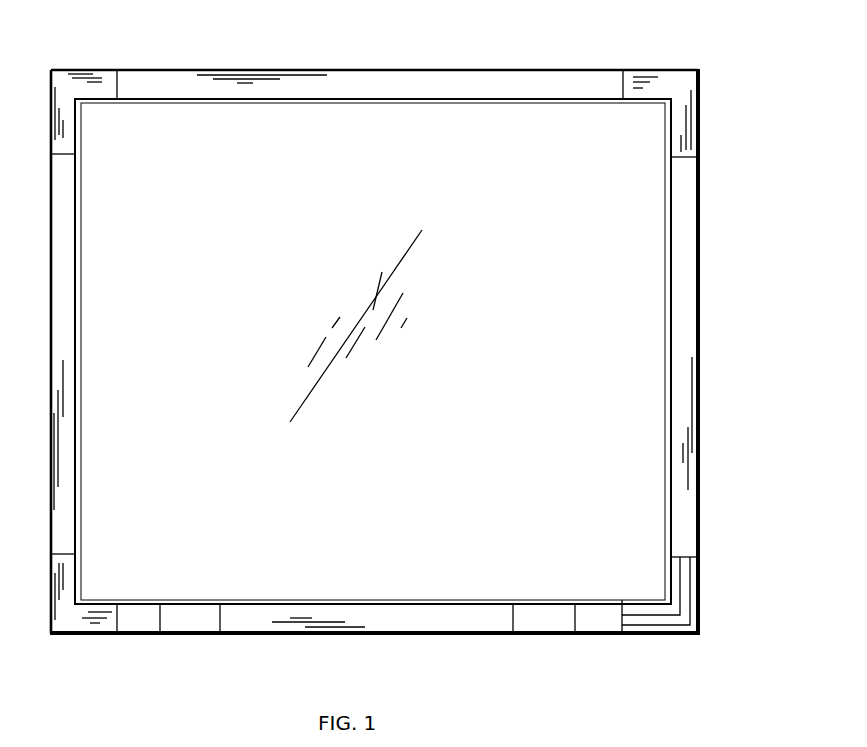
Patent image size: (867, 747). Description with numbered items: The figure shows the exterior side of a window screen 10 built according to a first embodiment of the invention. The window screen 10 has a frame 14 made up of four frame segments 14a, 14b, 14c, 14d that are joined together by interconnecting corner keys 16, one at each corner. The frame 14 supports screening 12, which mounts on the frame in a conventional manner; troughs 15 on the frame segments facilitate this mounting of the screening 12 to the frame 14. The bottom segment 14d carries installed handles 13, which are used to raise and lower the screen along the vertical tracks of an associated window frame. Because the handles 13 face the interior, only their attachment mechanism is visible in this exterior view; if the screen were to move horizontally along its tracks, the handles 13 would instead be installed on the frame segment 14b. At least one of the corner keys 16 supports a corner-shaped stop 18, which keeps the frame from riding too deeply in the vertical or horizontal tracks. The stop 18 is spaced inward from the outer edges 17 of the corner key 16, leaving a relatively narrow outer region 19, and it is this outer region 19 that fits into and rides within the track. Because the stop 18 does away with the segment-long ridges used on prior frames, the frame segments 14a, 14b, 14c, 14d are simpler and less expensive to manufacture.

The window screen 10 is at (578, 40).
The screening 12 is at (368, 421).
The handles 13 is at (192, 627).
The frame 14 is at (721, 421).
The frame segment 14a is at (290, 104).
The frame segment 14b is at (664, 300).
The frame segment 14c is at (82, 285).
The bottom segment 14d is at (319, 573).
The troughs 15 is at (420, 600).
The corner keys 16 is at (78, 36).
The outer edges 17 is at (700, 571).
The corner-shaped stop 18 is at (684, 601).
The outer region 19 is at (693, 612).